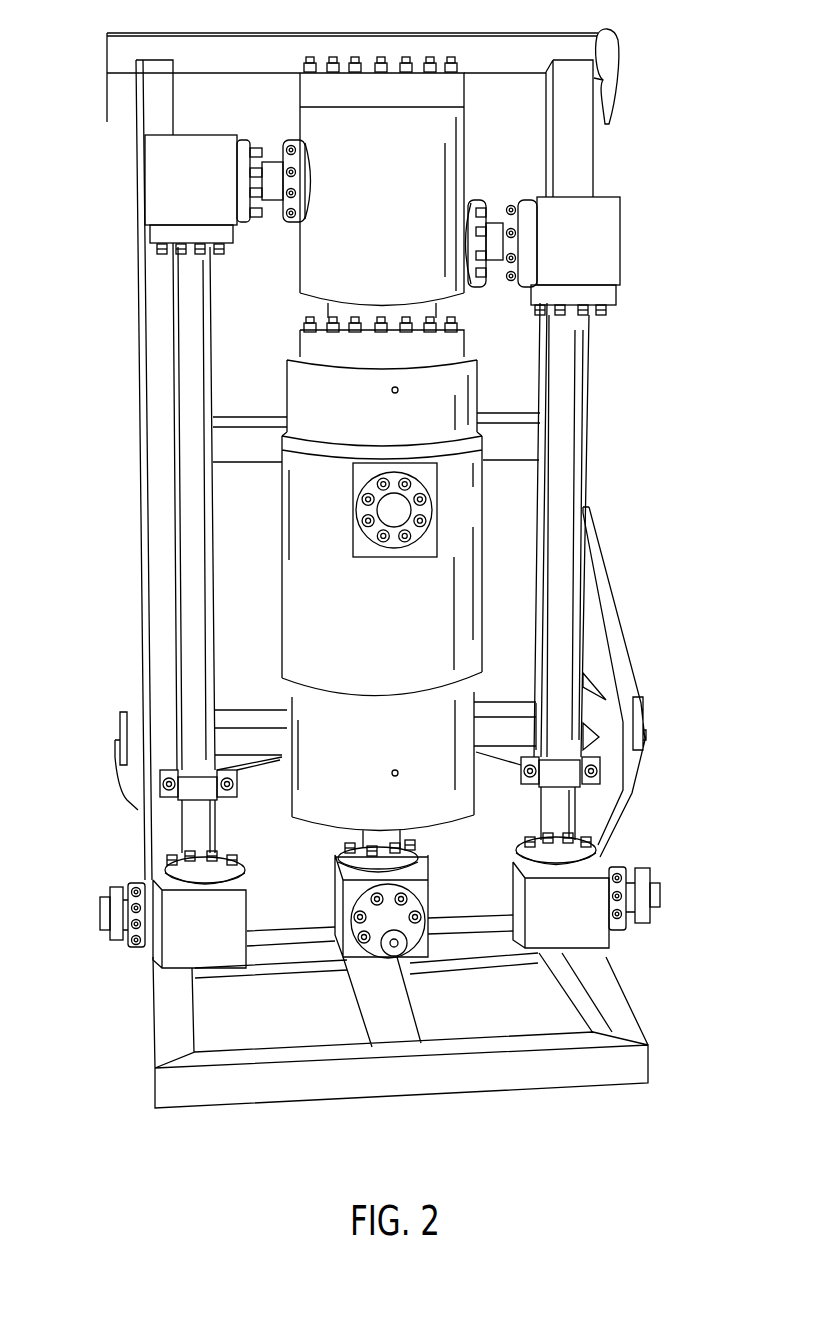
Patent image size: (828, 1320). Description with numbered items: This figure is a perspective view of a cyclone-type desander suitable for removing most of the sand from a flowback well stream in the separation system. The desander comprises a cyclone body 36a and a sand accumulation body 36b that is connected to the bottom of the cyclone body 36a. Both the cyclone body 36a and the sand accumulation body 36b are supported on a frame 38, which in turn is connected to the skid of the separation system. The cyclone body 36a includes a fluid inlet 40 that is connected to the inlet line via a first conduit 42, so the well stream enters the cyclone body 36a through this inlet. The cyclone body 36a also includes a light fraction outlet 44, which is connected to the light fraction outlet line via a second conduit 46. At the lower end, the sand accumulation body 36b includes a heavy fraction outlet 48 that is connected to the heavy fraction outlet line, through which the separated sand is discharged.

The frame 38 is at (558, 47).
The fluid inlet 40 is at (469, 203).
The first conduit 42 is at (583, 403).
The light fraction outlet 44 is at (305, 143).
The second conduit 46 is at (183, 505).
The cyclone body 36a is at (310, 266).
The sand accumulation body 36b is at (475, 511).
The heavy fraction outlet 48 is at (350, 908).